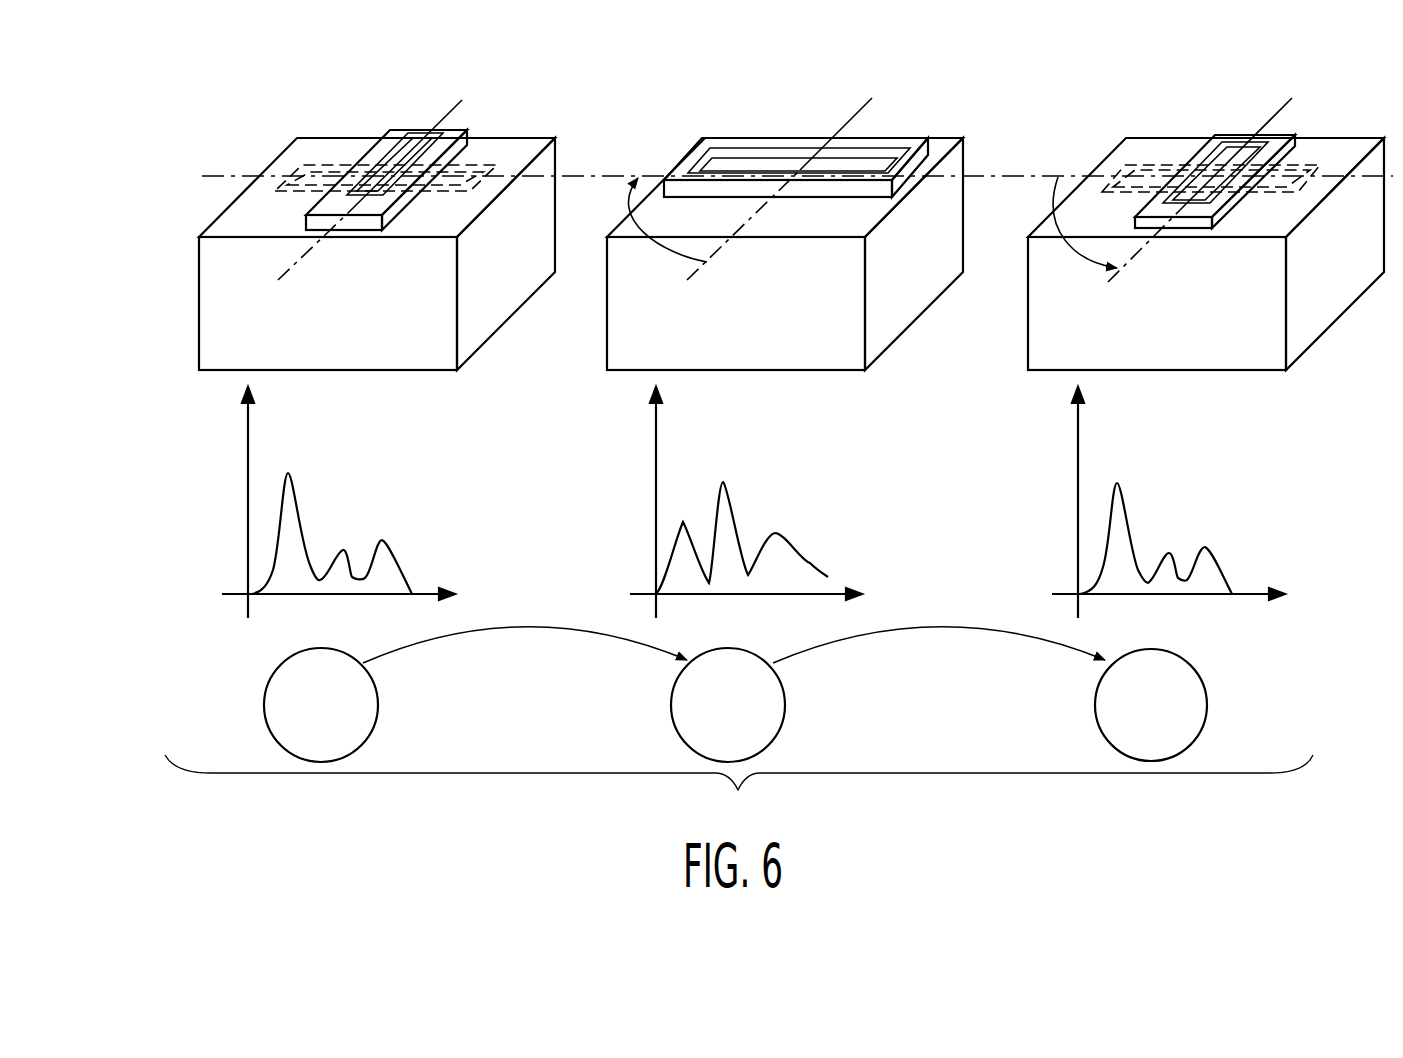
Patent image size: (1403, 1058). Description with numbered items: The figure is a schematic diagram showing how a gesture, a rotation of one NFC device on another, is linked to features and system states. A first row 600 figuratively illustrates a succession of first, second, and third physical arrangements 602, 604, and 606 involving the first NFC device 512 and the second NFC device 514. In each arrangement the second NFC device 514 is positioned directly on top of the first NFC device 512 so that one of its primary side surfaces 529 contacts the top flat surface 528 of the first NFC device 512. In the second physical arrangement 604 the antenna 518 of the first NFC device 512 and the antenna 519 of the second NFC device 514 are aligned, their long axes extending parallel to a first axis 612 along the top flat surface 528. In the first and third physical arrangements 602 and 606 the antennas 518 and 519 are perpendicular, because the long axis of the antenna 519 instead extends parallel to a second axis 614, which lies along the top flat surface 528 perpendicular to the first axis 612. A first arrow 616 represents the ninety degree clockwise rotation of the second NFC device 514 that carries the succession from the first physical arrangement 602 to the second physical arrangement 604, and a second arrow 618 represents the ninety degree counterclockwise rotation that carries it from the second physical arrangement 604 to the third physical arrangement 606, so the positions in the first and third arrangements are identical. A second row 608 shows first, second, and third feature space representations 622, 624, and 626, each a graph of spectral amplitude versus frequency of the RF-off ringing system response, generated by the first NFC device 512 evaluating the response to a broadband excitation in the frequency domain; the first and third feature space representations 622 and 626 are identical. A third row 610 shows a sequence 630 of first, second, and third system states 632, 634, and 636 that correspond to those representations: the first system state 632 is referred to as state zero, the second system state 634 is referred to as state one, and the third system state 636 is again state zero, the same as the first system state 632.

The first row 600 is at (150, 293).
The first physical arrangement 602 is at (437, 97).
The second physical arrangement 604 is at (772, 103).
The third physical arrangement 606 is at (1197, 102).
The second row 608 is at (190, 433).
The third row 610 is at (222, 690).
The first NFC device 512 is at (314, 347).
The second NFC device 514 is at (407, 130).
The antenna of the first NFC device 518 is at (317, 162).
The antenna of the second NFC device 519 is at (453, 122).
The top flat surface 528 is at (220, 232).
The primary side surface 529 is at (388, 140).
The first axis 612 is at (232, 176).
The second axis 614 is at (297, 267).
The first arrow 616 is at (632, 188).
The second arrow 618 is at (1057, 191).
The first feature space representation 622 is at (370, 463).
The second feature space representation 624 is at (778, 463).
The third feature space representation 626 is at (1200, 463).
The sequence 630 is at (739, 791).
The first system state 632 is at (383, 718).
The second system state 634 is at (795, 713).
The third system state 636 is at (1240, 697).